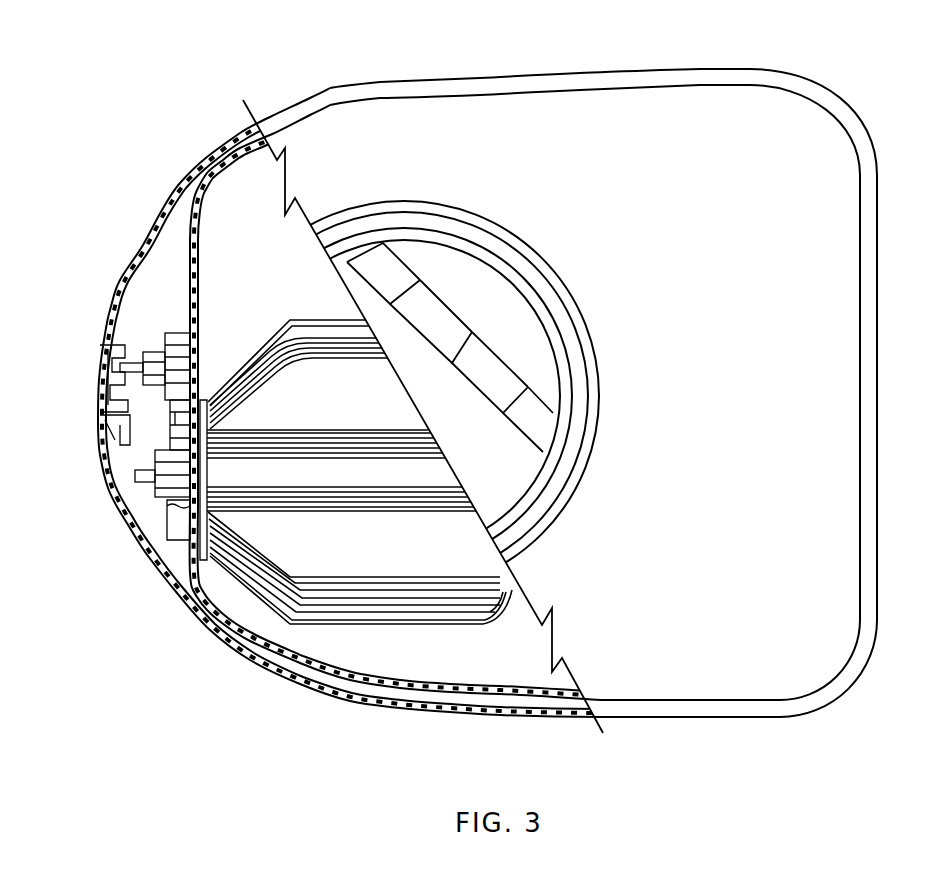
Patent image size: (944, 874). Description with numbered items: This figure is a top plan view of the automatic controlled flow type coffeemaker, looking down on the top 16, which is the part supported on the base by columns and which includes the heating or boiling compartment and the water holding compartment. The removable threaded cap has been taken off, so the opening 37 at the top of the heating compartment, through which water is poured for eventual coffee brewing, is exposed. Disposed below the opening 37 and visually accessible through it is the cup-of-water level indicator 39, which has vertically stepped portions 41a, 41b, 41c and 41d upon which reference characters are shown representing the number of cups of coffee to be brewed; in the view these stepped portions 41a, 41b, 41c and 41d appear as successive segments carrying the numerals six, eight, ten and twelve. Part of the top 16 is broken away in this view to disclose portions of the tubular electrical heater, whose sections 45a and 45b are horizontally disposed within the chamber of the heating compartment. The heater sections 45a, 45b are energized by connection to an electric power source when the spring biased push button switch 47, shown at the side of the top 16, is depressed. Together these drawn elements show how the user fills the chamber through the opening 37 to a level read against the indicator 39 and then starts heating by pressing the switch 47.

The top 16 is at (700, 60).
The opening 37 is at (532, 310).
The cup-of-water level indicator 39 is at (482, 300).
The vertically stepped portion 41a is at (553, 413).
The vertically stepped portion 41b is at (513, 372).
The vertically stepped portion 41c is at (430, 290).
The vertically stepped portion 41d is at (407, 252).
The heater section 45a is at (280, 350).
The heater section 45b is at (349, 498).
The spring biased push button switch 47 is at (93, 388).